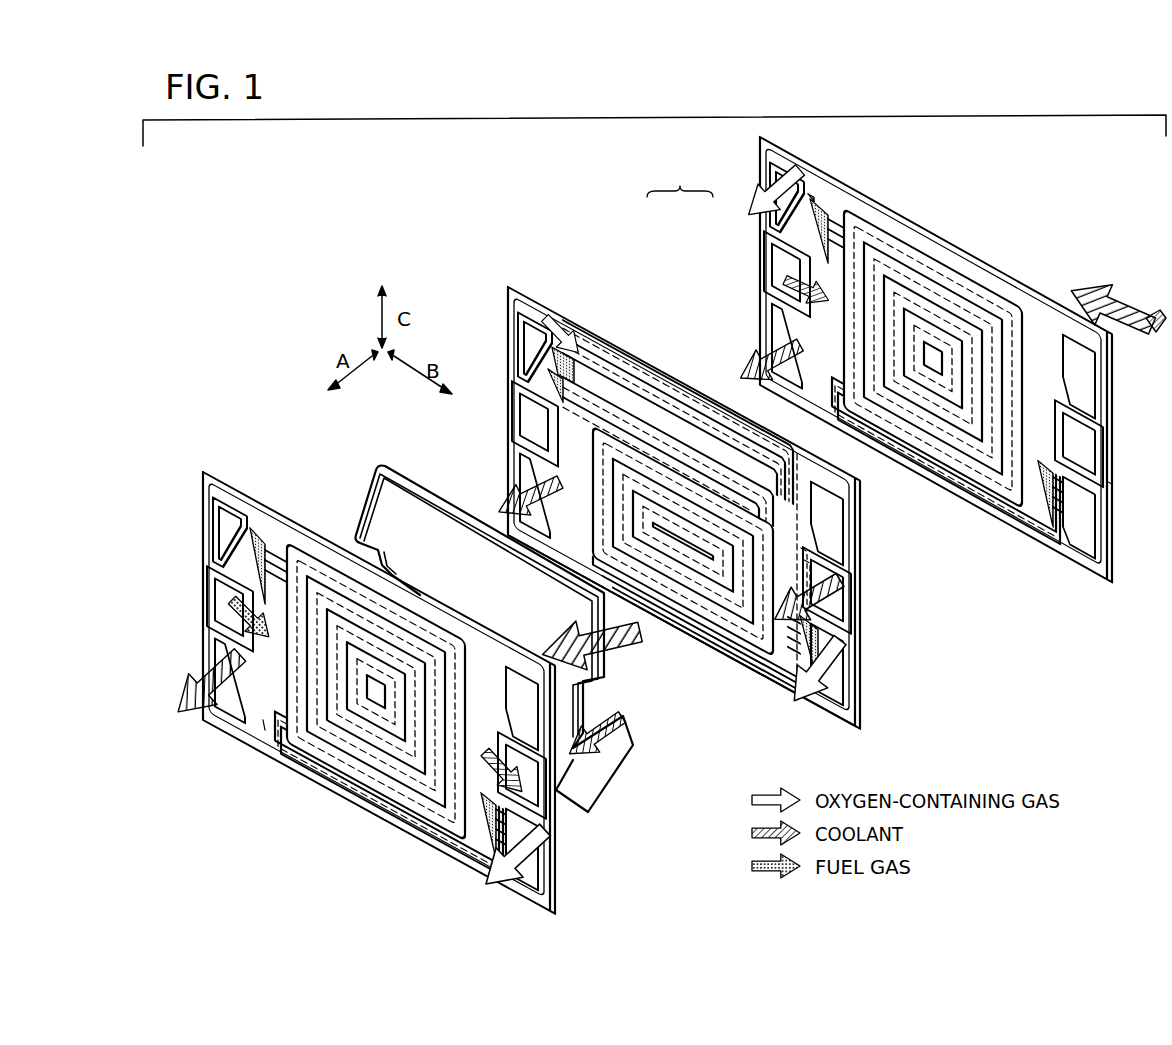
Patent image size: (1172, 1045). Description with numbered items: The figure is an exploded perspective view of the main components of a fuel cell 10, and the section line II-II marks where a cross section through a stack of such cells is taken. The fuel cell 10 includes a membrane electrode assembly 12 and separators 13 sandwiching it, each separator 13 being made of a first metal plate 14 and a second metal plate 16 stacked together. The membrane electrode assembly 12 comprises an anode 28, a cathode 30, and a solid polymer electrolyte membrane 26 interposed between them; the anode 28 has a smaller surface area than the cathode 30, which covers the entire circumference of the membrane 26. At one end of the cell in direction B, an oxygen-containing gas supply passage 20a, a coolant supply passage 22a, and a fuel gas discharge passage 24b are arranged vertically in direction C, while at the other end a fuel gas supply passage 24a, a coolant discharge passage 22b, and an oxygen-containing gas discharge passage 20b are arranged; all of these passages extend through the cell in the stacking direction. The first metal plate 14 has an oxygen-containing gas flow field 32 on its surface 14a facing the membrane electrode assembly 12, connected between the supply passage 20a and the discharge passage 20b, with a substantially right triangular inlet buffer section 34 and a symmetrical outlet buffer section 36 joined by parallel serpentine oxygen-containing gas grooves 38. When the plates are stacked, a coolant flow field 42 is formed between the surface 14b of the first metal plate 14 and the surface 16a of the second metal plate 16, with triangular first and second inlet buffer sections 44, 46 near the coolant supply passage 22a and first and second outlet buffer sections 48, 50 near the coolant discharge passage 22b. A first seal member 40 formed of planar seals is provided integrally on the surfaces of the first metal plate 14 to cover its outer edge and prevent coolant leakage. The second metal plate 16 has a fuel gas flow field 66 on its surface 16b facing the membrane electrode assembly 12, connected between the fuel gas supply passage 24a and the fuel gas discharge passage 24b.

The fuel cell 10 is at (190, 279).
The membrane electrode assembly 12 is at (477, 610).
The separator 13 is at (680, 179).
The first metal plate 14 is at (609, 330).
The surface of the first metal plate 14a is at (780, 694).
The surface of the first metal plate 14b is at (848, 728).
The second metal plate 16 is at (201, 466).
The surface of the second metal plate 16a is at (268, 752).
The surface of the second metal plate 16b is at (1086, 572).
The oxygen-containing gas supply passage 20a is at (232, 536).
The oxygen-containing gas discharge passage 20b is at (542, 862).
The coolant supply passage 22a is at (222, 601).
The coolant discharge passage 22b is at (530, 779).
The fuel gas supply passage 24a is at (518, 678).
The fuel gas discharge passage 24b is at (220, 667).
The solid polymer electrolyte membrane 26 is at (372, 480).
The anode 28 is at (373, 510).
The cathode 30 is at (398, 470).
The oxygen-containing gas flow field 32 is at (656, 396).
The inlet buffer section 34 is at (549, 330).
The outlet buffer section 36 is at (772, 673).
The oxygen-containing gas groove 38 is at (760, 445).
The first seal member 40 is at (708, 646).
The coolant flow field 42 is at (336, 762).
The first inlet buffer section 44 is at (545, 578).
The second inlet buffer section 46 is at (818, 198).
The first outlet buffer section 48 is at (1042, 508).
The second outlet buffer section 50 is at (800, 505).
The fuel gas flow field 66 is at (366, 790).
The section line II- II is at (214, 540).